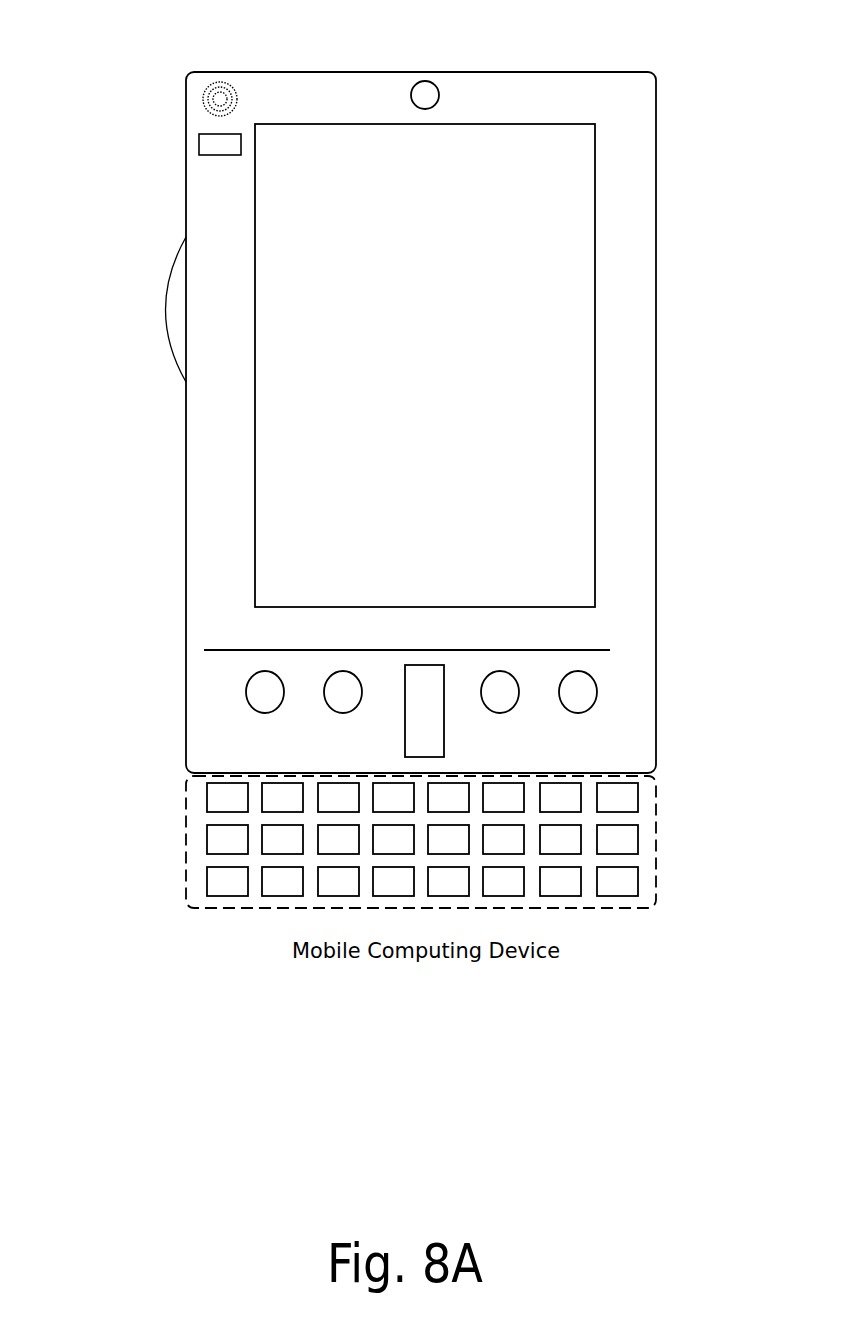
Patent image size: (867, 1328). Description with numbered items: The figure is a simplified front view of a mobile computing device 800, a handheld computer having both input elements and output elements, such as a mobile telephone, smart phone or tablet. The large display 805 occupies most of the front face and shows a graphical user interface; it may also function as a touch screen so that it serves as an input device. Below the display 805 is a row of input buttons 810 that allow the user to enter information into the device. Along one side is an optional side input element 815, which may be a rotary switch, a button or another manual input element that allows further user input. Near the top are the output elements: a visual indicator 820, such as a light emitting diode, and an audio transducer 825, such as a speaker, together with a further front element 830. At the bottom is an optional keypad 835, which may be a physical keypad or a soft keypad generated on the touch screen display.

The mobile computing device 800 is at (643, 90).
The display 805 is at (265, 520).
The input buttons 810 is at (423, 715).
The side input element 815 is at (177, 308).
The visual indicator 820 is at (202, 149).
The audio transducer 825 is at (202, 99).
The camera 830 is at (440, 95).
The keypad 835 is at (195, 885).